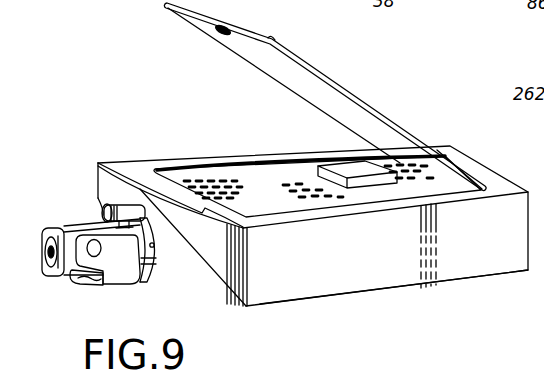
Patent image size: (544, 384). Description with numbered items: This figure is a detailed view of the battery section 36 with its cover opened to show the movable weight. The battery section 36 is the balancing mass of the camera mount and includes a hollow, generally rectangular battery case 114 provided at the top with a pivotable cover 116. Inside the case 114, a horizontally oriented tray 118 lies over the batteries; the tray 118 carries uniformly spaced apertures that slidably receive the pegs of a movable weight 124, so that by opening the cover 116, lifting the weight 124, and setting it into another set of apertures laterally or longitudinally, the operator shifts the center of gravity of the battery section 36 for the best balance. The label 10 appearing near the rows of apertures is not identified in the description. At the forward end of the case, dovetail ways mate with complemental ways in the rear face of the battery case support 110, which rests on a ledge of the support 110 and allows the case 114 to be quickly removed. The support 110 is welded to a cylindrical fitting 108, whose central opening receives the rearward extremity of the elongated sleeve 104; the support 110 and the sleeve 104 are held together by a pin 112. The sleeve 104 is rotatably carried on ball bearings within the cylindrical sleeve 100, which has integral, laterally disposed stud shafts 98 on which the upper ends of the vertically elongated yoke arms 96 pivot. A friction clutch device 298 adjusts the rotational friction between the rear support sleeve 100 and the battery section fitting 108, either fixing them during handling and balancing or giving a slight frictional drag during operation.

The sensing holes 10 is at (341, 199).
The battery section 36 is at (365, 264).
The yoke arms 96 is at (121, 284).
The stud shafts 98 is at (101, 249).
The cylindrical sleeve 100 is at (67, 230).
The elongated sleeve 104 is at (62, 280).
The cylindrical fitting 108 is at (152, 262).
The battery case support 110 is at (199, 290).
The pin 112 is at (155, 246).
The battery case 114 is at (299, 290).
The pivotable cover 116 is at (344, 89).
The tray 118 is at (243, 178).
The movable weight 124 is at (337, 164).
The friction clutch device 298 is at (107, 208).